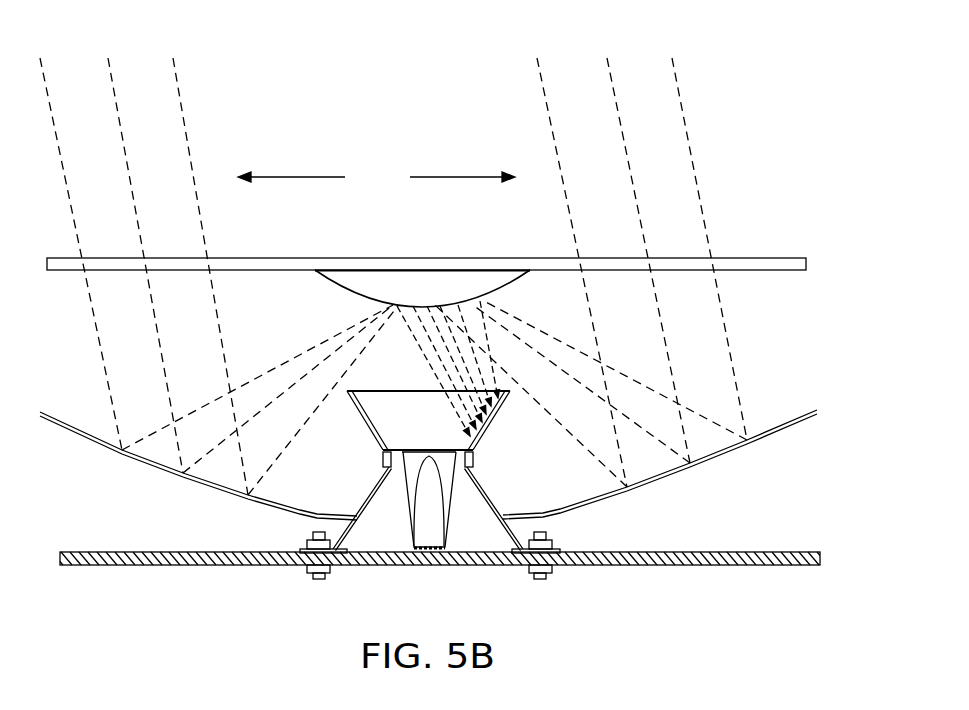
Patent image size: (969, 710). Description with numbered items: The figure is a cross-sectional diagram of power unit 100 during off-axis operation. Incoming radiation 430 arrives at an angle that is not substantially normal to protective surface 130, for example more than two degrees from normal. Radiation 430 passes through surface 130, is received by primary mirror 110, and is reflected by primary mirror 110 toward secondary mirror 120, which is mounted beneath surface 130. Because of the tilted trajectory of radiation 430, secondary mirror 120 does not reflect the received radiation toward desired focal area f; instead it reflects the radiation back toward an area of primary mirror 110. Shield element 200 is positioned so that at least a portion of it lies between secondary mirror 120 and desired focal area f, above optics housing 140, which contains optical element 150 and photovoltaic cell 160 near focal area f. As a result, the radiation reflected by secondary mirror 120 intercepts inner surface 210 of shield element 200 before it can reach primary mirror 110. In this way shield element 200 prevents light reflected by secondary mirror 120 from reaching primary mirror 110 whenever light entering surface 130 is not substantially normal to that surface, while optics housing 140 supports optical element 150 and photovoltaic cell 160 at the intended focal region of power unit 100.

The power unit 100 is at (780, 163).
The primary mirror 110 is at (737, 450).
The secondary mirror 120 is at (513, 283).
The protective surface 130 is at (788, 258).
The optics housing 140 is at (490, 496).
The optical element 150 is at (407, 497).
The photovoltaic cell 160 is at (445, 548).
The shield element 200 is at (498, 410).
The inner surface 210 is at (468, 441).
The incoming radiation 430 is at (376, 177).
The desired focal area f is at (430, 450).